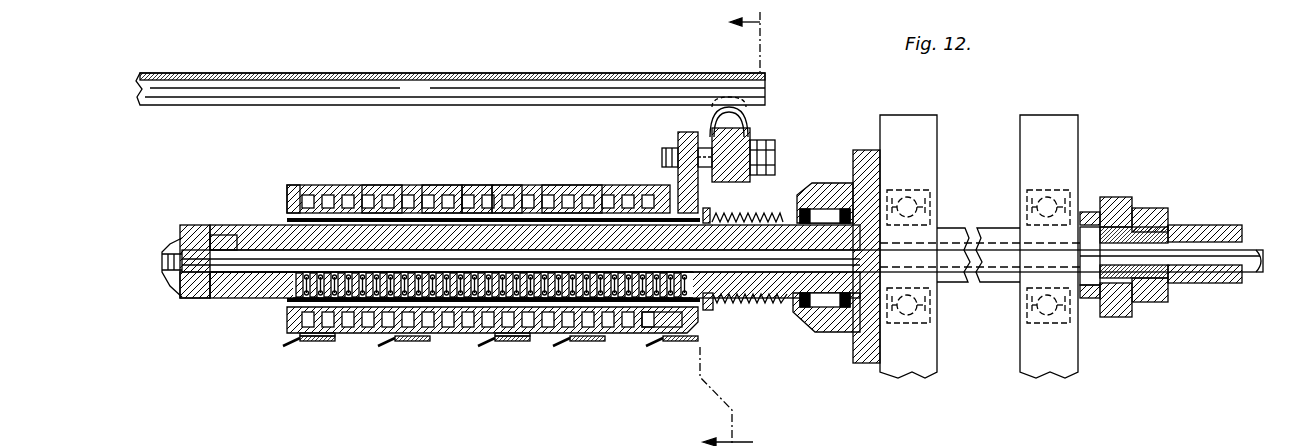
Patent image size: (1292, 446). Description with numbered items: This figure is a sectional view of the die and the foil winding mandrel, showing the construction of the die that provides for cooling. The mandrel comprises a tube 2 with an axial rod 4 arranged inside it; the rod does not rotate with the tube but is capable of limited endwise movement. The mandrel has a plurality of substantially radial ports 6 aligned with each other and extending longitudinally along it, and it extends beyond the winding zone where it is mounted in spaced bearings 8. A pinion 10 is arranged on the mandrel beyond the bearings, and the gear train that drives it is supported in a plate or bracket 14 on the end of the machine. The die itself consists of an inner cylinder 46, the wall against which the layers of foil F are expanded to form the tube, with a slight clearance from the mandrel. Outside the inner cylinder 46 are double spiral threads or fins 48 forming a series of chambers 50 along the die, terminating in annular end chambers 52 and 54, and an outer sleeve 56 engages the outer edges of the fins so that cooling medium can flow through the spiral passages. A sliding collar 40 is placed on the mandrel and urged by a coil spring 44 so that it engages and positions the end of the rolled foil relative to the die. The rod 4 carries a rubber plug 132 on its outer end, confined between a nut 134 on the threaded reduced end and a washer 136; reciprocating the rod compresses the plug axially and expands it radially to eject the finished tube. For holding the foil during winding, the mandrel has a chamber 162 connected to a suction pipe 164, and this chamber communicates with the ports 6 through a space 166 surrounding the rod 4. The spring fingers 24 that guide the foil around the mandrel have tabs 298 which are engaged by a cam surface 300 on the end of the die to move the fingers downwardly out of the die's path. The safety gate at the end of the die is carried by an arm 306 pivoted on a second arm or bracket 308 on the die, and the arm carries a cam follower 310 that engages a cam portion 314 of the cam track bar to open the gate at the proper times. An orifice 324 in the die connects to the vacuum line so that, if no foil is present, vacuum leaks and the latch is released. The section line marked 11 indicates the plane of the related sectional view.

The tube 2 is at (245, 227).
The axial rod 4 is at (1250, 246).
The radial ports 6 is at (380, 336).
The bearings 8 is at (1020, 207).
The pinion 10 is at (1118, 197).
The section line 11- 11 is at (750, 228).
The plate or bracket 14 is at (1046, 115).
The spring fingers 24 is at (327, 342).
The sliding collar 40 is at (710, 212).
The coil spring 44 is at (726, 303).
The inner cylinder 46 is at (442, 194).
The double spiral threads or fins 48 is at (582, 190).
The chambers 50 is at (385, 194).
The annular end chamber 52 is at (305, 184).
The annular end chamber 54 is at (655, 186).
The outer sleeve 56 is at (472, 192).
The foil F is at (505, 198).
The rubber plug 132 is at (196, 226).
The nut 134 is at (172, 240).
The washer 136 is at (205, 298).
The chamber 162 is at (812, 330).
The suction pipe 164 is at (830, 205).
The space 166 is at (290, 290).
The tabs 298 is at (305, 343).
The cam surface 300 is at (698, 325).
The arm 306 is at (752, 130).
The second arm or bracket 308 is at (680, 134).
The cam follower 310 is at (748, 108).
The cam portion 314 is at (556, 72).
The orifice 324 is at (660, 335).